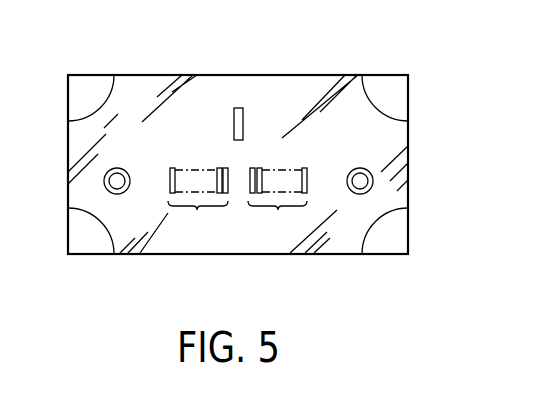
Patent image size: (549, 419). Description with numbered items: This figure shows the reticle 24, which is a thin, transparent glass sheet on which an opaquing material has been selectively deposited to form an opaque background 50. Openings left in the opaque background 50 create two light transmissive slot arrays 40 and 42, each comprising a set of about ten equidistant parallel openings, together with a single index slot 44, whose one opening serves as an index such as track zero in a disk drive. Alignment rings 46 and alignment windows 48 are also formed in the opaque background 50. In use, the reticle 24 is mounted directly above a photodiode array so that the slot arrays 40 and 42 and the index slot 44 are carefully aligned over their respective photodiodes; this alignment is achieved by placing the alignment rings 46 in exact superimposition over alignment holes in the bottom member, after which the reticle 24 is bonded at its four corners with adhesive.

The reticle 24 is at (212, 50).
The light transmissive slot array 40 is at (197, 208).
The light transmissive slot array 42 is at (278, 208).
The index slot 44 is at (240, 112).
The alignment rings 46 is at (104, 182).
The alignment windows 48 is at (83, 82).
The opaque background 50 is at (297, 78).